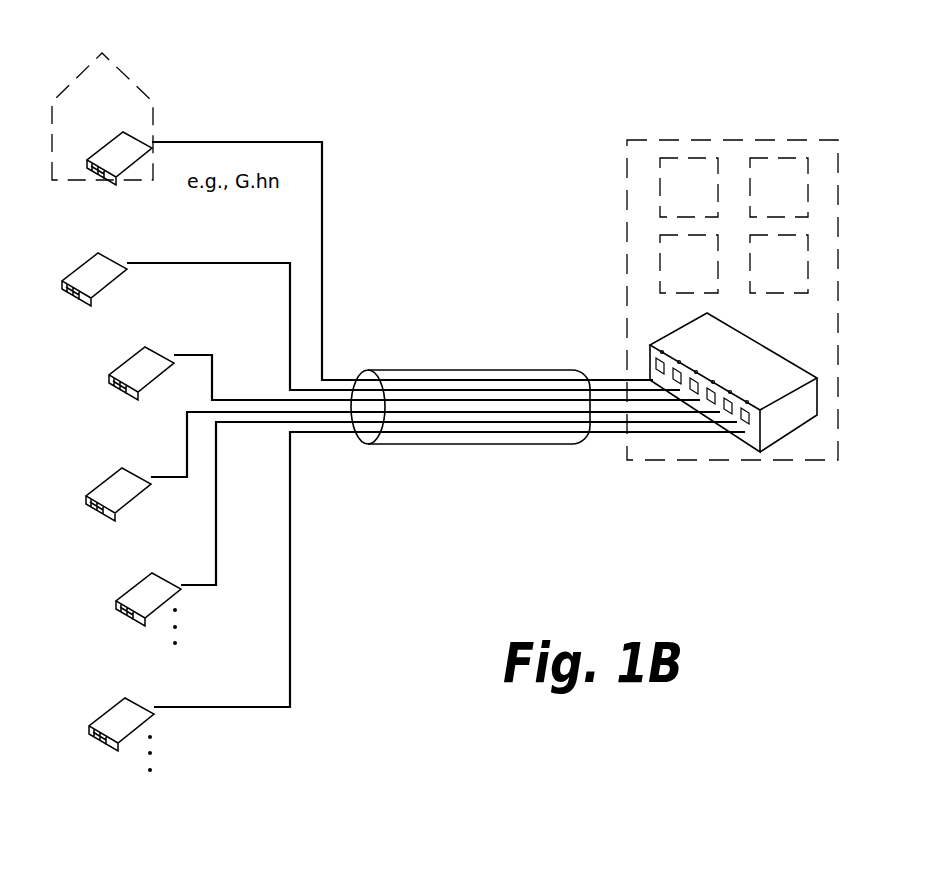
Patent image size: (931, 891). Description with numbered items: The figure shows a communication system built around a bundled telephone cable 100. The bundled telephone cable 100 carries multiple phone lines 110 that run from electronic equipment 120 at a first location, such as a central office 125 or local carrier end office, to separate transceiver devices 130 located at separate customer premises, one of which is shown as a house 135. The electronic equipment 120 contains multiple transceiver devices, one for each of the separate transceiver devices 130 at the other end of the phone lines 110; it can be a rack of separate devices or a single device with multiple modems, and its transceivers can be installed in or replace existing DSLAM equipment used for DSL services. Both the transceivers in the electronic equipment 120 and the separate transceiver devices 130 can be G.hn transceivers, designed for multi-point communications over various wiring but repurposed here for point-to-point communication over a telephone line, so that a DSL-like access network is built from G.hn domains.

The bundled telephone cable 100 is at (473, 369).
The phone lines 110 is at (346, 356).
The electronic equipment 120 is at (748, 447).
The central office 125 is at (647, 462).
The transceiver devices 130 is at (140, 133).
The house 135 is at (99, 62).